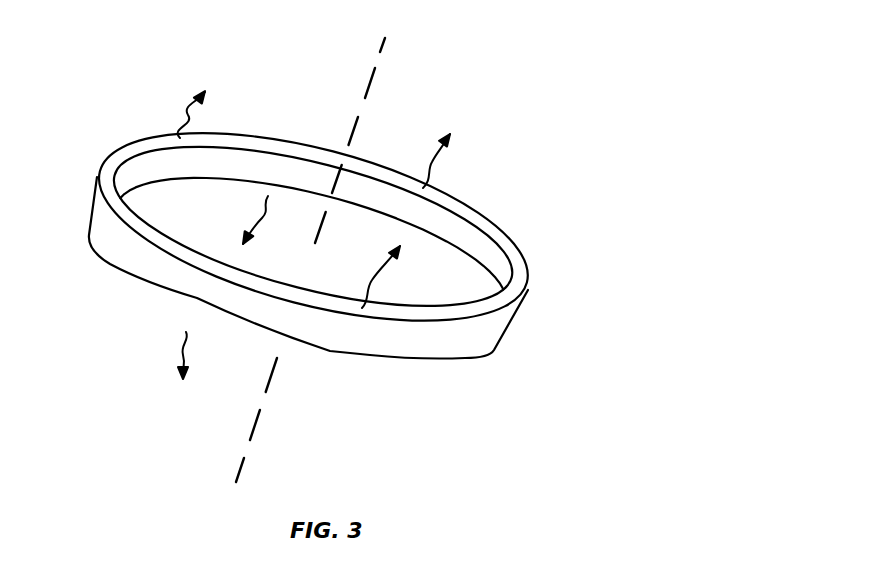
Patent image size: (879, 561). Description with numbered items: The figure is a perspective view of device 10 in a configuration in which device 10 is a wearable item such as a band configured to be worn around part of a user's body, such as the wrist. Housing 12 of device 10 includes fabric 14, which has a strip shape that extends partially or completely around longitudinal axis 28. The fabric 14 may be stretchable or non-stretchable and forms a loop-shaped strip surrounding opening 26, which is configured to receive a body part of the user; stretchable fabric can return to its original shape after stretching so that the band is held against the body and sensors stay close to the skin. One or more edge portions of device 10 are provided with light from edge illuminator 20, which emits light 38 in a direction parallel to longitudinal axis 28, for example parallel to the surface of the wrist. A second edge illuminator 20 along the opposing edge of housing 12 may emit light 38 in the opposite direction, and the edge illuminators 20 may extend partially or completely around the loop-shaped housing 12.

The device 10 is at (469, 53).
The housing 12 is at (495, 333).
The fabric 14 is at (108, 212).
The edge illuminator 20 is at (518, 268).
The opening 26 is at (215, 197).
The longitudinal axis 28 is at (372, 78).
The light 38 is at (177, 110).